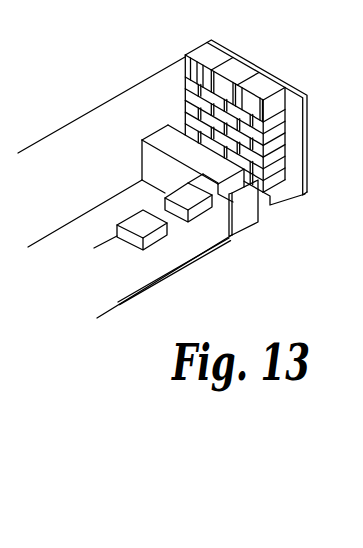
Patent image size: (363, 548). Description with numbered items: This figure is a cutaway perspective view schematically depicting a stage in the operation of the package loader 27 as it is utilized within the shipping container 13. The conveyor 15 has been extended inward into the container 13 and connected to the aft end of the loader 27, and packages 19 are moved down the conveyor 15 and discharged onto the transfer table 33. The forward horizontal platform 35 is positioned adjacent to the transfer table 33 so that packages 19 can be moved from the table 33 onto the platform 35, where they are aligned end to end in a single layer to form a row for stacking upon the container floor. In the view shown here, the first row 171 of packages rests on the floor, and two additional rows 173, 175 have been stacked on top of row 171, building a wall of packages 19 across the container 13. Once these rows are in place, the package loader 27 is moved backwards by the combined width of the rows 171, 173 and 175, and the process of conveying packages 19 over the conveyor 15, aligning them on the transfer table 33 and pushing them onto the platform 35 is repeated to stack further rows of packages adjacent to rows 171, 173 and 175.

The shipping container 13 is at (53, 152).
The conveyor 15 is at (110, 246).
The packages 19 is at (142, 222).
The package loader 27 is at (253, 233).
The transfer table 33 is at (162, 143).
The forward horizontal platform 35 is at (288, 199).
The row of packages 171 is at (305, 168).
The row of packages 173 is at (181, 107).
The row of packages 175 is at (175, 74).